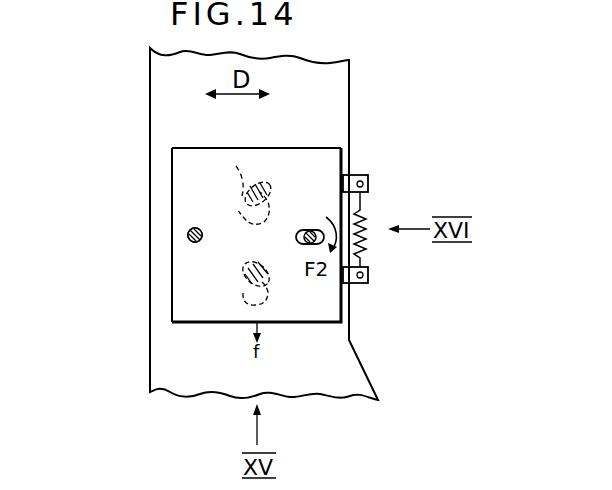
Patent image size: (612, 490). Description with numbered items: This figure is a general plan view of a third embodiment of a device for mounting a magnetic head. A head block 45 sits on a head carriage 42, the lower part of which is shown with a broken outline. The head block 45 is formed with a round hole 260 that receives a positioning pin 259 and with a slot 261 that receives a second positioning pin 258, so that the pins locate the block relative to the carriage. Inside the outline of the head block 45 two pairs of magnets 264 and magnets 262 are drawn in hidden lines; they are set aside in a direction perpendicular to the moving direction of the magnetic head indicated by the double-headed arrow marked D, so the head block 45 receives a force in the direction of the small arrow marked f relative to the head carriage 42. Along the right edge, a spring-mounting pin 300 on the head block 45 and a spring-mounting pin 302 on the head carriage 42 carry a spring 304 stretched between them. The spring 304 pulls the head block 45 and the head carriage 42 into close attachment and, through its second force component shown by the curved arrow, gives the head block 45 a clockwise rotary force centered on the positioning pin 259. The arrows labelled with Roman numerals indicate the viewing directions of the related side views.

The head carriage 42 is at (352, 383).
The head block 45 is at (327, 168).
The positioning pin 258 is at (311, 228).
The positioning pin 259 is at (189, 238).
The round hole 260 is at (190, 229).
The slot 261 is at (297, 231).
The magnets 262 is at (240, 213).
The magnets 264 is at (243, 259).
The spring-mounting pin 300 is at (368, 184).
The spring-mounting pin 302 is at (368, 276).
The spring 304 is at (366, 220).